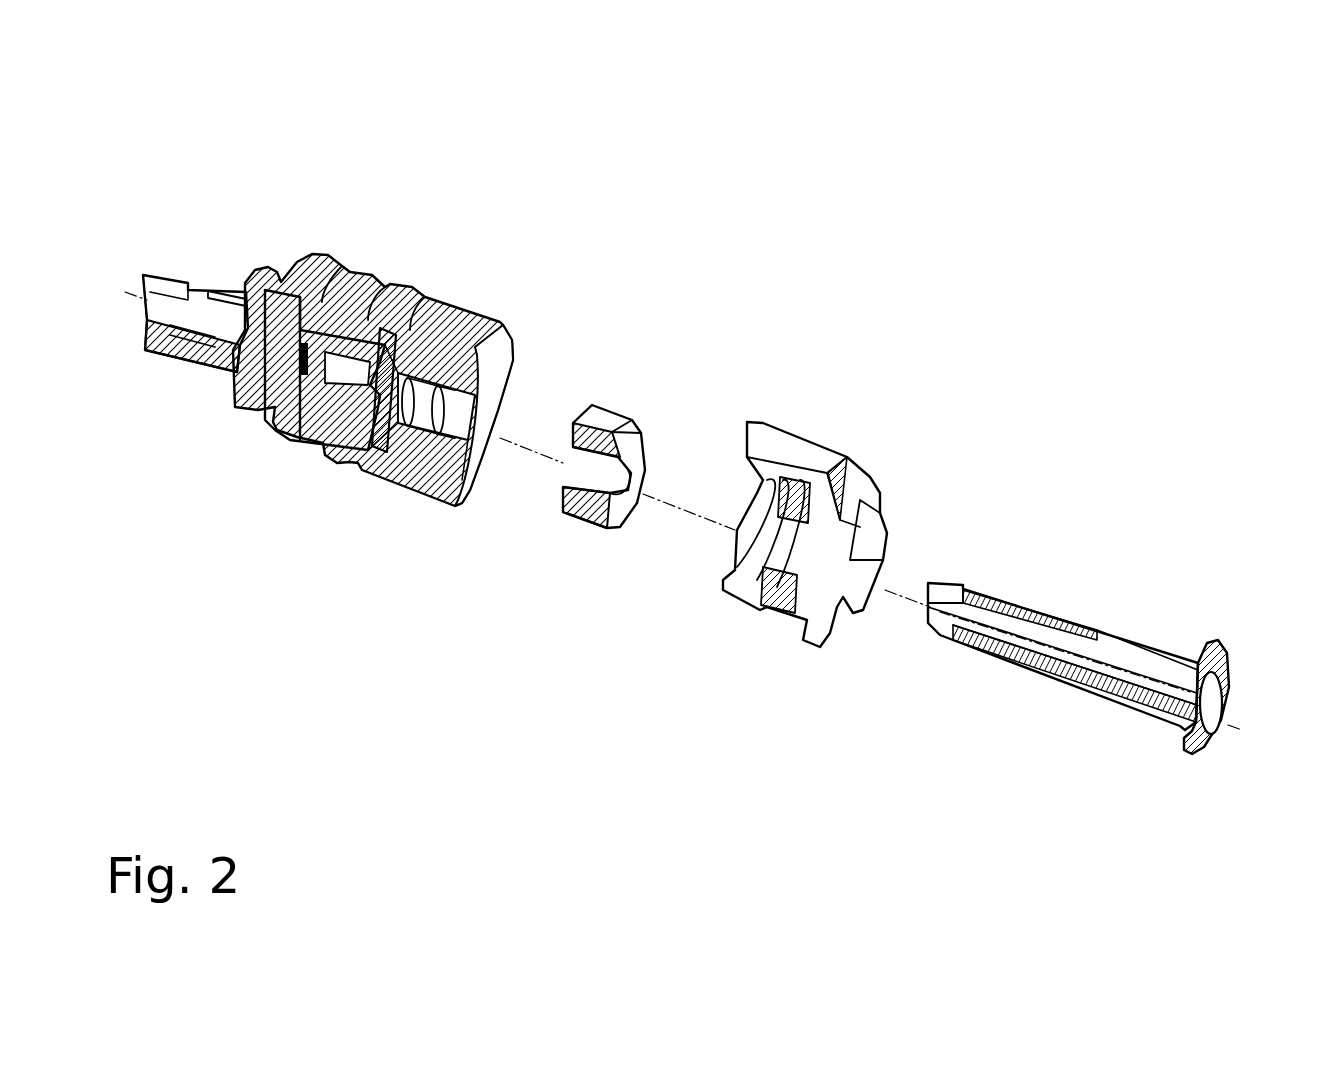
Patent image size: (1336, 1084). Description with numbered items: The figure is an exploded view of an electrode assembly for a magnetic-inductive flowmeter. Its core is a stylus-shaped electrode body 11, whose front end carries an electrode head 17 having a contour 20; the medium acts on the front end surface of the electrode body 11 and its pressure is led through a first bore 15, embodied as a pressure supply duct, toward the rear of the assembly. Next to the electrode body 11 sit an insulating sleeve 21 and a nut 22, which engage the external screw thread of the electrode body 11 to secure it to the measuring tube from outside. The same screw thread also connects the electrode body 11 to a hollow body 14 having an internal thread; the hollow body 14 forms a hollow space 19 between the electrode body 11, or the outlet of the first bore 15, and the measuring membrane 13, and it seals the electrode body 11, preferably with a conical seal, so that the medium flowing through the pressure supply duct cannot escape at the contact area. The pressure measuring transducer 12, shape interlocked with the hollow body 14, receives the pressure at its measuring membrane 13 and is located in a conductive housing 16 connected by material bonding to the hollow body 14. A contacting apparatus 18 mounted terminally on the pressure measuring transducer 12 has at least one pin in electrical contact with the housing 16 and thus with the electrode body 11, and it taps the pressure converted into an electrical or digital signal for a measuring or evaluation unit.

The electrode body 11 is at (1063, 677).
The pressure measuring transducer 12 is at (325, 417).
The measuring membrane 13 is at (395, 377).
The hollow body 14 is at (421, 493).
The first bore 15 is at (1003, 628).
The housing 16 is at (327, 267).
The electrode head 17 is at (1193, 755).
The contacting apparatus 18 is at (229, 287).
The hollow space 19 is at (468, 413).
The contour 20 is at (1217, 688).
The insulating sleeve 21 is at (851, 467).
The nut 22 is at (608, 423).